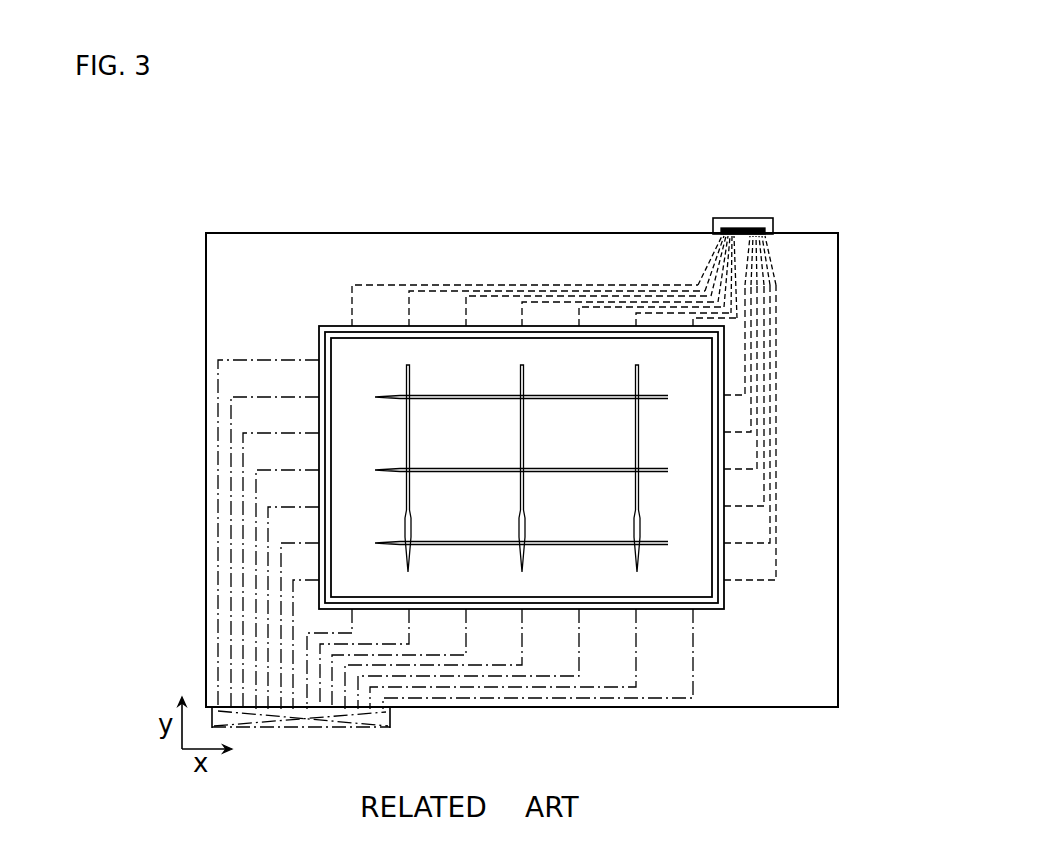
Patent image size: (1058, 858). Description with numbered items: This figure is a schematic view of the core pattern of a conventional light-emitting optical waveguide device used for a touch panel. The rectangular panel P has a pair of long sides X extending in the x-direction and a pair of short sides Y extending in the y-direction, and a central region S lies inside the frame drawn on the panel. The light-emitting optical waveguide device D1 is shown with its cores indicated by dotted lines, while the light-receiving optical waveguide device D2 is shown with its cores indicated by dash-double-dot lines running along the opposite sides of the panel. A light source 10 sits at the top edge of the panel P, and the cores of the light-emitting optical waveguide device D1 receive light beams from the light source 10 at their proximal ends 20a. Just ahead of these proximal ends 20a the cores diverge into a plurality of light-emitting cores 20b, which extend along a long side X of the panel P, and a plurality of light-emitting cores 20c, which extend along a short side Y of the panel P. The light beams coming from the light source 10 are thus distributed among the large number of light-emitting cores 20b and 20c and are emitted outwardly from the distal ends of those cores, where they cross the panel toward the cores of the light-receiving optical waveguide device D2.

The rectangular panel P is at (295, 227).
The light source 10 is at (736, 218).
The proximal ends of the cores 20a is at (713, 246).
The light-emitting cores 20b is at (562, 277).
The light-emitting cores 20c is at (783, 422).
The light-emitting optical waveguide device D1 is at (834, 240).
The light-receiving optical waveguide device D2 is at (218, 633).
The sensing region S is at (521, 467).
The long sides X is at (471, 256).
The short sides Y is at (817, 494).